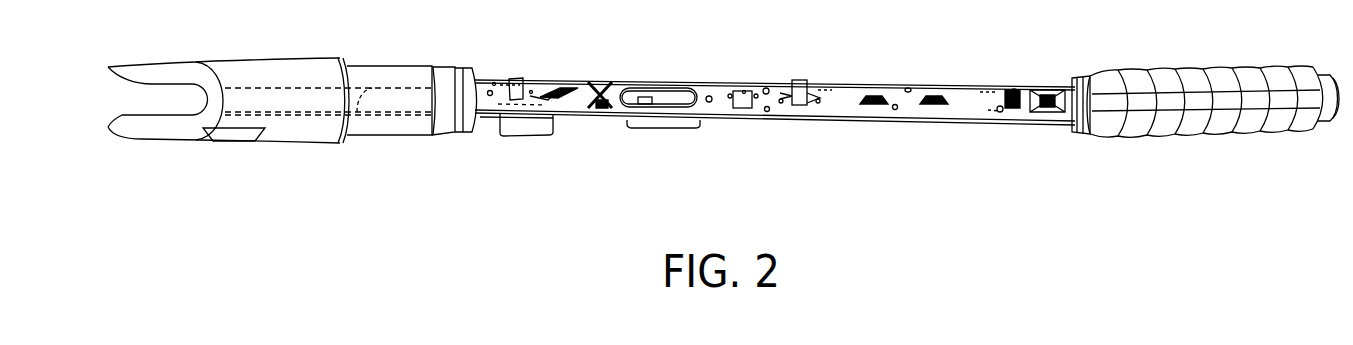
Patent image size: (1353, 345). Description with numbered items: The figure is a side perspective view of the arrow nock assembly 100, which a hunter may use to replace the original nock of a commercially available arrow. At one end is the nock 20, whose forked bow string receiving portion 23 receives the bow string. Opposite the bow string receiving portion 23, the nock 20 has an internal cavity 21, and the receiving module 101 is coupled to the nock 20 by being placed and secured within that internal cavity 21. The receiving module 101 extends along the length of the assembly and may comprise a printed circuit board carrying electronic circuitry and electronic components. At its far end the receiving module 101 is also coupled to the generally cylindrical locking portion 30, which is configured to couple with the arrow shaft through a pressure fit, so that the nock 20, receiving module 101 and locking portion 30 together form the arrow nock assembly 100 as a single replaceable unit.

The arrow nock assembly 100 is at (541, 261).
The nock 20 is at (328, 158).
The bow string receiving portion 23 is at (118, 98).
The internal cavity 21 is at (398, 118).
The receiving module 101 is at (830, 121).
The locking portion 30 is at (1187, 128).